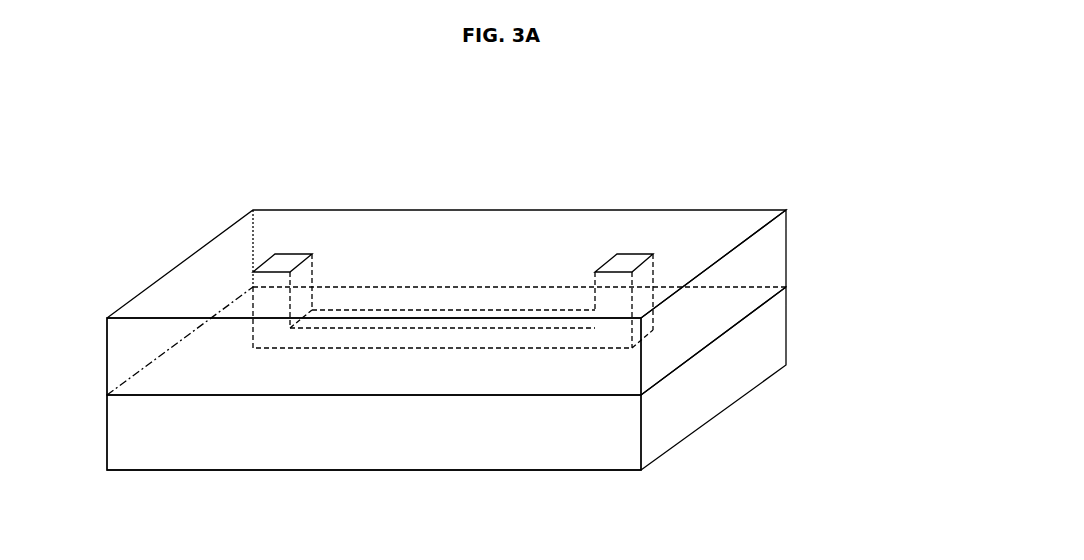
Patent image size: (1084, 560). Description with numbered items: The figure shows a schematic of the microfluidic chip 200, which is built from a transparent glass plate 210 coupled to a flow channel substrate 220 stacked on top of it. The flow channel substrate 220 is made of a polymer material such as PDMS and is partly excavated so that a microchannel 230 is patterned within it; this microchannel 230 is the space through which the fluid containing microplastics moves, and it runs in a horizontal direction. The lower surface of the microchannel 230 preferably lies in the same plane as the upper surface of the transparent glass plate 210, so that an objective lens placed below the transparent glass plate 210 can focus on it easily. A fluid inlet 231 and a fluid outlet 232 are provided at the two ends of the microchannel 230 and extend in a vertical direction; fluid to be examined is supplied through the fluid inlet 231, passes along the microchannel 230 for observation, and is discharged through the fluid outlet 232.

The microfluidic chip 200 is at (698, 188).
The transparent glass plate 210 is at (786, 325).
The flow channel substrate 220 is at (786, 249).
The microchannel 230 is at (381, 340).
The fluid inlet 231 is at (290, 254).
The fluid outlet 232 is at (630, 254).